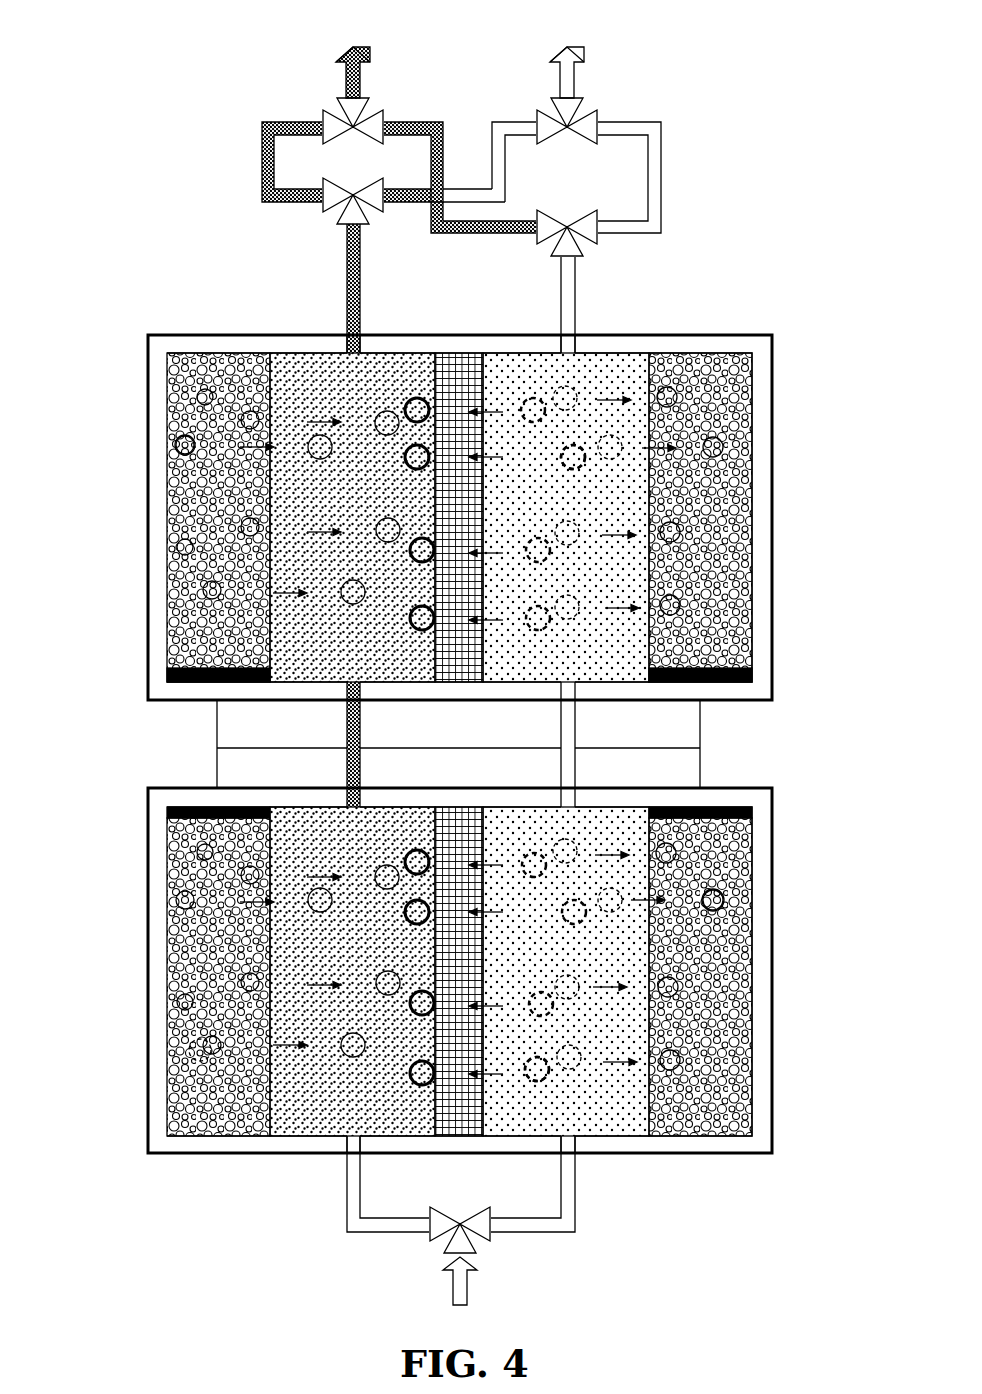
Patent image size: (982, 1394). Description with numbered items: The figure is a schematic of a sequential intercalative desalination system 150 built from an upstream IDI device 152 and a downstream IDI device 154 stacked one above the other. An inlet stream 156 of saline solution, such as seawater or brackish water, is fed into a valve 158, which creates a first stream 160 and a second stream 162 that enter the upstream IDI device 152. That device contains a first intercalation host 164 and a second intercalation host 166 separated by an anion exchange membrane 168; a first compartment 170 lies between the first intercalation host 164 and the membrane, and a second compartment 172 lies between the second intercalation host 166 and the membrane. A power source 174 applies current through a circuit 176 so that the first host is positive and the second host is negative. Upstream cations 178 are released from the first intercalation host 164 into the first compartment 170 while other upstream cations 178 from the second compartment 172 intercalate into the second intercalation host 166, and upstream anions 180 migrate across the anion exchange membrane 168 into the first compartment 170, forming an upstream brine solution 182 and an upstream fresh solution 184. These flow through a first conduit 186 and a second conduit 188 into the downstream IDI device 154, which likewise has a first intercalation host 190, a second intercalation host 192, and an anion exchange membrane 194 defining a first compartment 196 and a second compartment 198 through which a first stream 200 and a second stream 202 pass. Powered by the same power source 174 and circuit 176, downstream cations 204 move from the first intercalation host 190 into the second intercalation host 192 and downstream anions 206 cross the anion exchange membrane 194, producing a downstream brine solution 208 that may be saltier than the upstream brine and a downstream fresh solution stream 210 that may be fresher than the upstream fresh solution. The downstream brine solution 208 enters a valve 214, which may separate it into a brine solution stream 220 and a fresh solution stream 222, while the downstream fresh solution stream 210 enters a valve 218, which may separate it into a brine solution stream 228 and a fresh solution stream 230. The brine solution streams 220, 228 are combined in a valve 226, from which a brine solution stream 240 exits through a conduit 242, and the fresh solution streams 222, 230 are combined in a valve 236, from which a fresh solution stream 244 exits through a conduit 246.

The sequential intercalative desalination system 150 is at (128, 1179).
The upstream IDI device 152 is at (118, 948).
The downstream IDI device 154 is at (118, 514).
The inlet stream 156 is at (452, 1288).
The valve 158 is at (492, 1237).
The first stream 160 is at (347, 1175).
The second stream 162 is at (576, 1175).
The first intercalation host 164 is at (232, 1130).
The second intercalation host 166 is at (714, 1130).
The anion exchange membrane 168 is at (474, 1130).
The first compartment 170 is at (310, 1137).
The second compartment 172 is at (603, 1138).
The power source 174 is at (472, 760).
The circuit 176 is at (300, 747).
The upstream cations 178 is at (725, 900).
The upstream anions 180 is at (543, 1084).
The upstream brine solution 182 is at (372, 1109).
The upstream fresh solution 184 is at (611, 1107).
The first conduit 186 is at (362, 738).
The second conduit 188 is at (576, 736).
The first intercalation host 190 is at (232, 657).
The second intercalation host 192 is at (714, 657).
The anion exchange membrane 194 is at (474, 674).
The first compartment 196 is at (374, 666).
The second compartment 198 is at (587, 666).
The first stream 200 is at (310, 352).
The second stream 202 is at (608, 352).
The downstream cations 204 is at (163, 437).
The downstream anions 206 is at (573, 470).
The downstream brine solution 208 is at (398, 352).
The downstream fresh solution stream 210 is at (533, 352).
The valve 214 is at (323, 205).
The valve 218 is at (600, 235).
The brine solution stream 220 is at (262, 162).
The fresh solution stream 222 is at (515, 122).
The valve 226 is at (347, 97).
The brine solution stream 228 is at (493, 233).
The fresh solution stream 230 is at (661, 178).
The valve 236 is at (575, 98).
The brine solution stream 240 is at (353, 46).
The conduit 242 is at (340, 62).
The fresh solution stream 244 is at (567, 47).
The conduit 246 is at (580, 62).